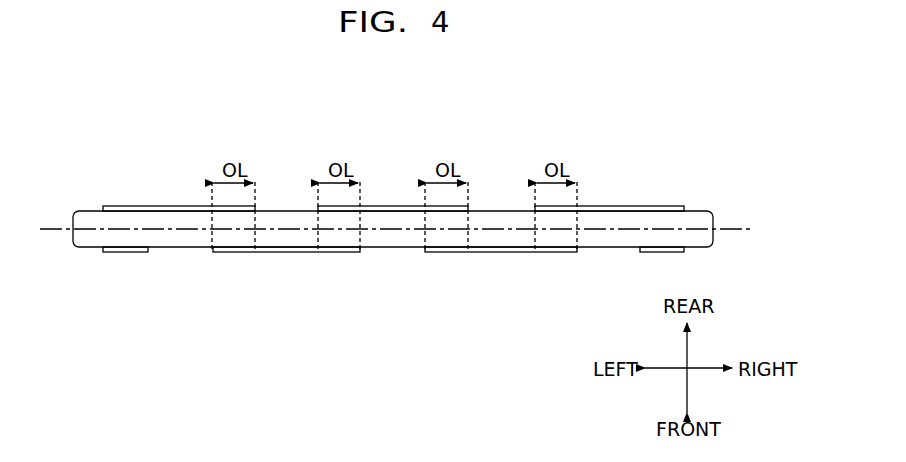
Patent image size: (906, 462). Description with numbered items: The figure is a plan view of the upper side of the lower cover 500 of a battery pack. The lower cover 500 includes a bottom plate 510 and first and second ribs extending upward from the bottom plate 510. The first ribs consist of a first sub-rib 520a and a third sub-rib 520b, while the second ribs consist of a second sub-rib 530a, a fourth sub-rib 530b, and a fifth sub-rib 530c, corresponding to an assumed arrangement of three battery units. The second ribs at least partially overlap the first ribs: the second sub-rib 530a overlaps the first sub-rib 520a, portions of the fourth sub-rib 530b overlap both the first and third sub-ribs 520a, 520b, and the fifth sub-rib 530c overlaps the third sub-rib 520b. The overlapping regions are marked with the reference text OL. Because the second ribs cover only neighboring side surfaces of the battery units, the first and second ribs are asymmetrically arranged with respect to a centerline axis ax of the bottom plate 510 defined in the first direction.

The lower cover 500 is at (413, 210).
The bottom plate 510 is at (89, 242).
The first sub-rib 520a is at (286, 252).
The third sub-rib 520b is at (498, 252).
The second sub-rib 530a is at (180, 206).
The fourth sub-rib 530b is at (395, 206).
The fifth sub-rib 530c is at (609, 206).
The centerline axis ax is at (410, 228).